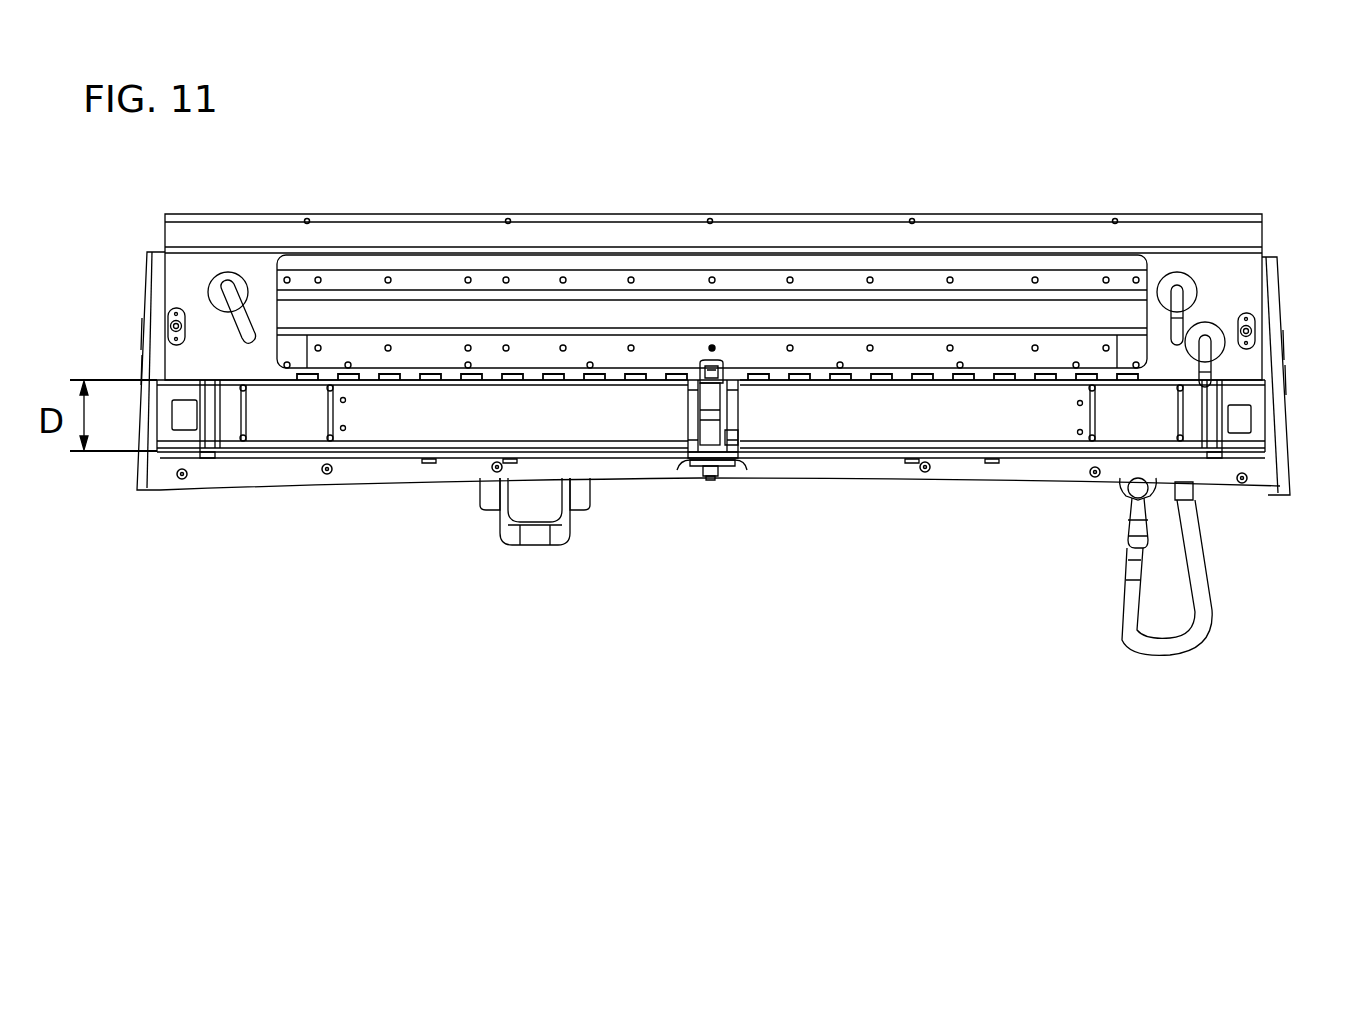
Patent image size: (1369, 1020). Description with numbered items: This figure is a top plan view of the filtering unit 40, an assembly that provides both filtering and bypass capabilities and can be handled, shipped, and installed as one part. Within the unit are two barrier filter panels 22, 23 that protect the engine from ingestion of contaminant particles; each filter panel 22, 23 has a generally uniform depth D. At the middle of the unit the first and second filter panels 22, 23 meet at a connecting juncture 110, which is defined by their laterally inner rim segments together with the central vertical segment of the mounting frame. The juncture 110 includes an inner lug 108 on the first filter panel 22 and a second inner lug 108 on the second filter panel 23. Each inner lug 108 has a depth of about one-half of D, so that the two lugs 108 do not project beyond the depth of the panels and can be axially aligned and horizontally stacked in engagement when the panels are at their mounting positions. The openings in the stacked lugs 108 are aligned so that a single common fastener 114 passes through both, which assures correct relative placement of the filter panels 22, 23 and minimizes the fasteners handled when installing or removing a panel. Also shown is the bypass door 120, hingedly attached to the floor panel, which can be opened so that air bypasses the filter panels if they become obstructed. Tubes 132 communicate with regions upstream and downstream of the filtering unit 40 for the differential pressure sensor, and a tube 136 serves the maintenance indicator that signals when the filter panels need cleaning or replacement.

The filtering unit 40 is at (626, 192).
The bypass door 120 is at (757, 258).
The tube 136 is at (240, 315).
The tubes 132 is at (1182, 300).
The second filter panel 23 is at (397, 445).
The first filter panel 22 is at (895, 443).
The inner lug 108 is at (698, 430).
The connecting juncture 110 is at (738, 435).
The fastener 114 is at (705, 482).